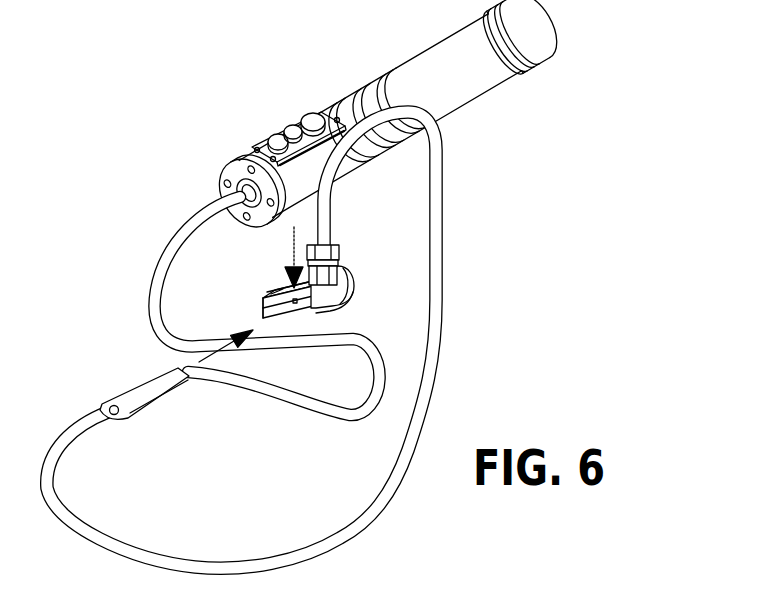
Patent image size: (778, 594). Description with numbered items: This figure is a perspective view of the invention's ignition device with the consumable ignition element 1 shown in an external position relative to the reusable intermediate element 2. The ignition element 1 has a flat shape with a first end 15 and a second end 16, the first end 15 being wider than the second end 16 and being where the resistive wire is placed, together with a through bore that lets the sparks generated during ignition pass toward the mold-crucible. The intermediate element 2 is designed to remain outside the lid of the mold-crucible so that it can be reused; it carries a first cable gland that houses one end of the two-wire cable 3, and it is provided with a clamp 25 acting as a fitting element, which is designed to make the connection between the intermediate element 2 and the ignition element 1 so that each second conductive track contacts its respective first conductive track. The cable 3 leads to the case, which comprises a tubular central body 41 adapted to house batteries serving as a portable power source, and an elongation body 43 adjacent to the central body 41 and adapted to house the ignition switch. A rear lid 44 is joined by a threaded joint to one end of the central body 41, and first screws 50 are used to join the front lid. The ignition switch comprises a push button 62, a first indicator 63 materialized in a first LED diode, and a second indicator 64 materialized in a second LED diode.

The ignition element 1 is at (159, 414).
The intermediate element 2 is at (365, 264).
The two-wire cable 3 is at (163, 268).
The first end 15 is at (118, 431).
The second end 16 is at (150, 374).
The clamp 25 is at (268, 284).
The central body 41 is at (467, 83).
The elongation body 43 is at (343, 172).
The rear lid 44 is at (563, 33).
The first screws 50 is at (226, 186).
The push button 62 is at (316, 110).
The first indicator 63 is at (293, 125).
The second indicator 64 is at (275, 137).